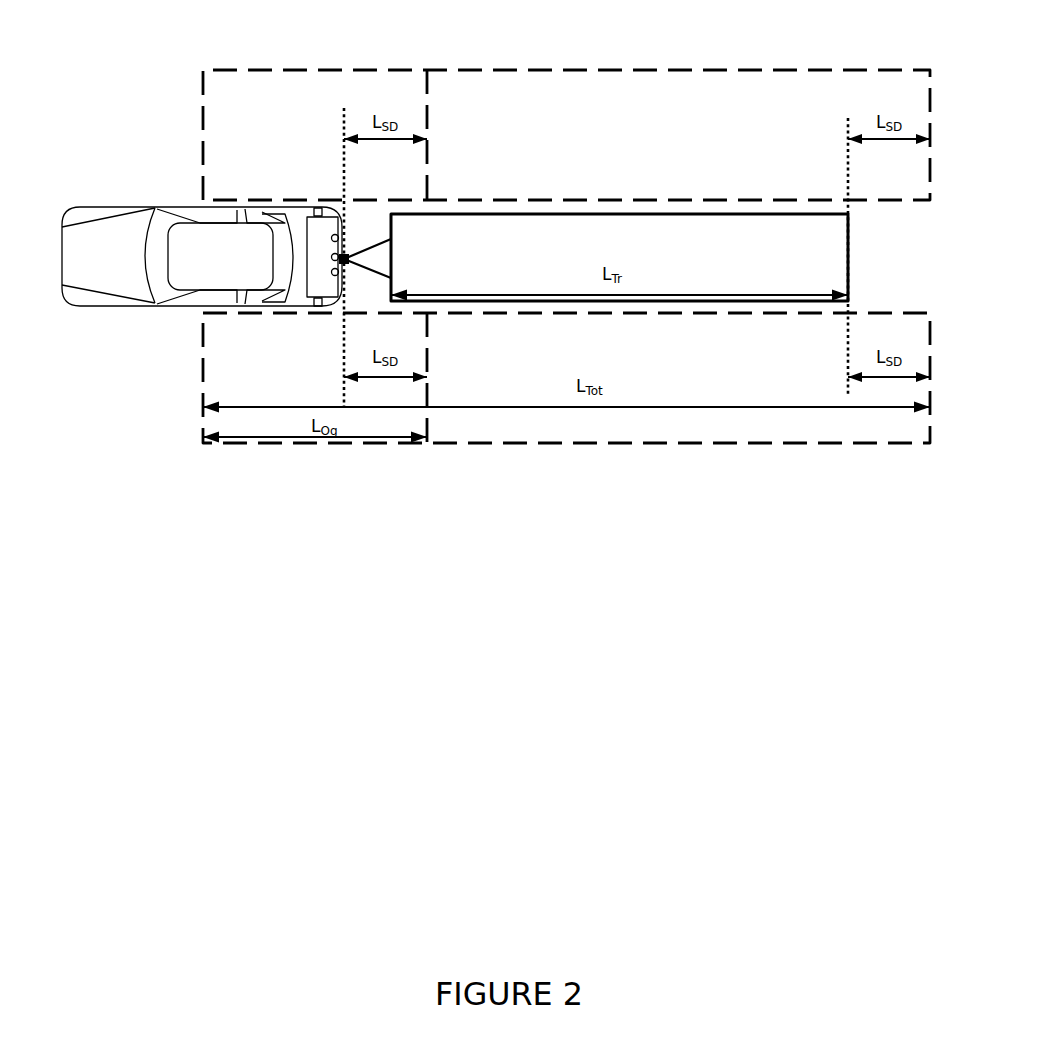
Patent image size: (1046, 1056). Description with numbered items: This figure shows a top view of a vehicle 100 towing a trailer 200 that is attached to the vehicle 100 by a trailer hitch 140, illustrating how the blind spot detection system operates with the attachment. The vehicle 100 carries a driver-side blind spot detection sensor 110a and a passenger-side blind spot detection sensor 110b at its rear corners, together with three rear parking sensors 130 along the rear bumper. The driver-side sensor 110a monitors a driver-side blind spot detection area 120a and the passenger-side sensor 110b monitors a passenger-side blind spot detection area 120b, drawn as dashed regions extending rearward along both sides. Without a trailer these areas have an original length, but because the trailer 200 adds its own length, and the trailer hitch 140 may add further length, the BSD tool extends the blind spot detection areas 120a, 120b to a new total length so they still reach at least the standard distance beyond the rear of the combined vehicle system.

The vehicle 100 is at (82, 214).
The driver-side blind spot detection sensor 110a is at (318, 306).
The passenger-side blind spot detection sensor 110b is at (318, 208).
The driver-side blind spot detection area 120a is at (203, 377).
The passenger-side blind spot detection area 120b is at (230, 70).
The rear parking sensors 130 is at (331, 237).
The trailer hitch 140 is at (356, 252).
The trailer 200 is at (619, 257).